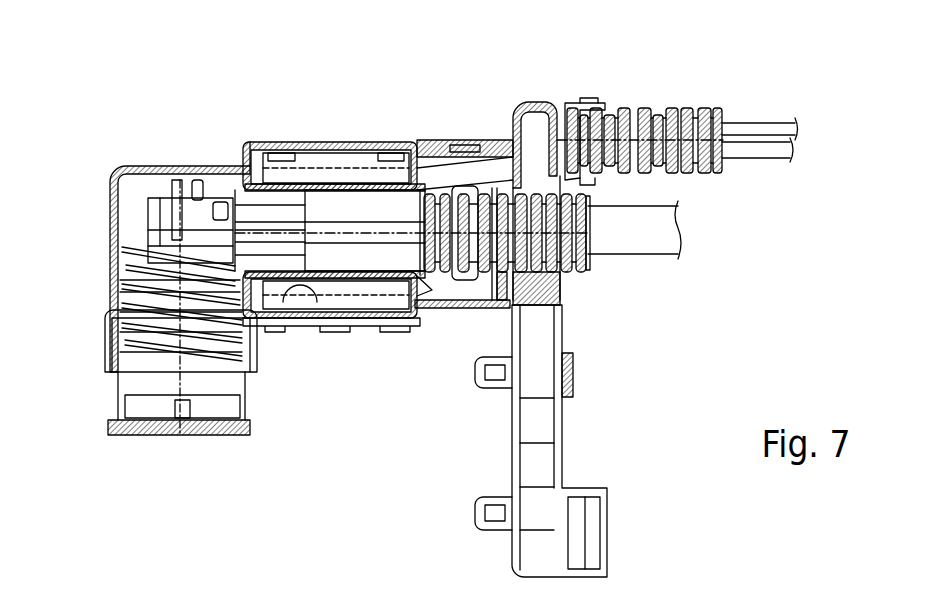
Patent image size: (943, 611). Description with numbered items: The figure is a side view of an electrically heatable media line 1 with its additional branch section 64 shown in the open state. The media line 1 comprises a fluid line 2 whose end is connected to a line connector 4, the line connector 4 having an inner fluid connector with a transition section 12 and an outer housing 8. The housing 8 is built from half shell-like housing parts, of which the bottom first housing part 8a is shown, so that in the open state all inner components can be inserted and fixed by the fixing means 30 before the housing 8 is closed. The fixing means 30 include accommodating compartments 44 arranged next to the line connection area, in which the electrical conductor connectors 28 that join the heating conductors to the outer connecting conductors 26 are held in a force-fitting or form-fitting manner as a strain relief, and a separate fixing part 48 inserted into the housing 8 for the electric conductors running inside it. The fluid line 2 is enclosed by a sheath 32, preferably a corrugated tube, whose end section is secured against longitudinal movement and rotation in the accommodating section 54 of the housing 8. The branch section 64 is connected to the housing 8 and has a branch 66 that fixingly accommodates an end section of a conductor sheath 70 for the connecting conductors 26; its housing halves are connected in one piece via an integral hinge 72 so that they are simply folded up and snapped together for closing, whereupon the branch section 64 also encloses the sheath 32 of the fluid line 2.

The electrically heatable media line 1 is at (636, 353).
The fluid line 2 is at (661, 243).
The line connector 4 is at (204, 127).
The housing 8 is at (118, 176).
The first housing part 8a is at (130, 226).
The transition section 12 is at (197, 212).
The connecting conductors 26 is at (451, 168).
The conductor connectors 28 is at (338, 160).
The fixing means 30 is at (108, 378).
The sheath 32 is at (567, 266).
The accommodating compartment 44 is at (391, 186).
The fixing part 48 is at (319, 208).
The accommodating section 54 is at (500, 291).
The branch section 64 is at (545, 120).
The branch 66 is at (590, 106).
The conductor sheath 70 is at (658, 117).
The integral hinge 72 is at (548, 336).